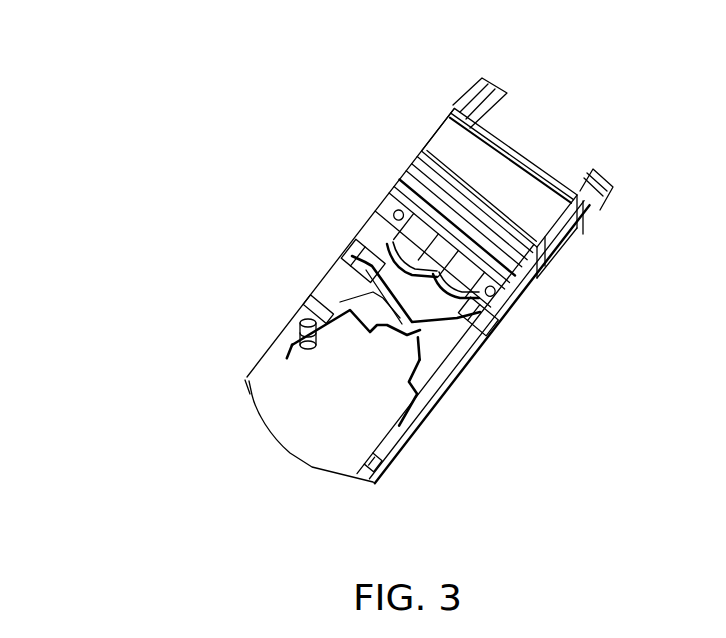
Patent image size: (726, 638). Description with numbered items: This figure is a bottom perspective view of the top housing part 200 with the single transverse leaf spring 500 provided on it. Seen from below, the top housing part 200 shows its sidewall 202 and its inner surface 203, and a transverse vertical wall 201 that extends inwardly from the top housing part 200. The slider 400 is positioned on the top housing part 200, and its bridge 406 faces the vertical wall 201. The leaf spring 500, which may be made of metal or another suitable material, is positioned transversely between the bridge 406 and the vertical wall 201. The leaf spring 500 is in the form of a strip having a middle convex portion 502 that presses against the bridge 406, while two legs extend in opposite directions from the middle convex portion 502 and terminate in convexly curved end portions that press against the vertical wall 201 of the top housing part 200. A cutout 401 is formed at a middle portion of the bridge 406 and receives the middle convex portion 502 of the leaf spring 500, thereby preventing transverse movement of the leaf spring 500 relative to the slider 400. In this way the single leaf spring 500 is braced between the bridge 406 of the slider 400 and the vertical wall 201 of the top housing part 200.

The top housing part 200 is at (342, 397).
The transverse vertical wall 201 is at (375, 245).
The sidewall 202 is at (362, 262).
The inner surface 203 is at (305, 418).
The slider 400 is at (497, 313).
The cutout 401 is at (398, 319).
The bridge 406 is at (390, 347).
The single transverse leaf spring 500 is at (347, 262).
The middle convex portion 502 is at (440, 393).